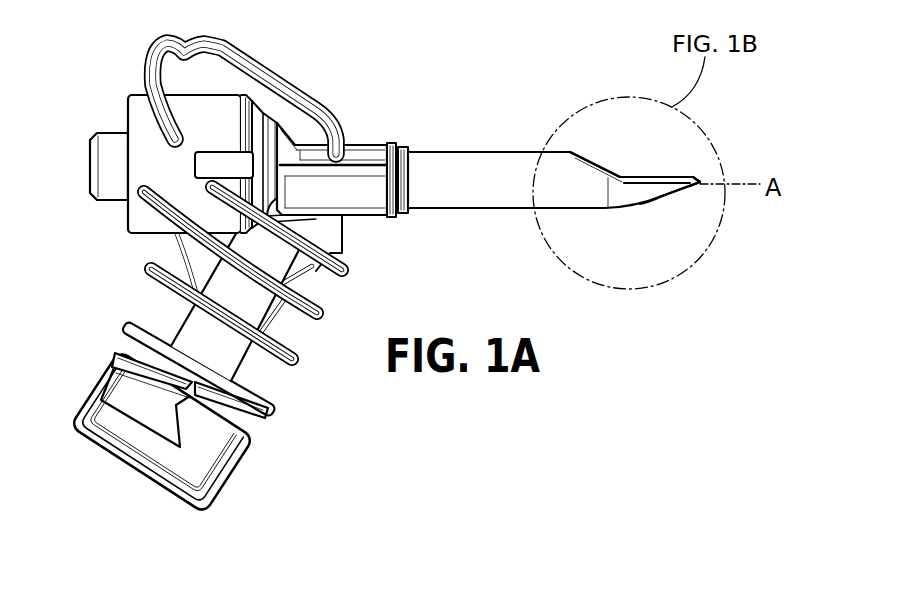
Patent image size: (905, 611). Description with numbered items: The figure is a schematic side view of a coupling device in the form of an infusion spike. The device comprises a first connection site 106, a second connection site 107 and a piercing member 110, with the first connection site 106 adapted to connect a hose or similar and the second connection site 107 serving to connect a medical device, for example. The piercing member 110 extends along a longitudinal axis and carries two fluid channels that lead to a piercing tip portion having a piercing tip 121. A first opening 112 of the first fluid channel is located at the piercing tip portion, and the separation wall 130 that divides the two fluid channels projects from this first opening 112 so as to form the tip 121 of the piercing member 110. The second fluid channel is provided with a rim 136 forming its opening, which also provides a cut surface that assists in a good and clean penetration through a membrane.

The first connection site 106 is at (232, 482).
The second connection site 107 is at (122, 131).
The piercing member 110 is at (450, 148).
The first opening 112 is at (592, 151).
The separation wall 130 is at (663, 176).
The piercing tip 121 is at (694, 179).
The rim 136 is at (660, 197).